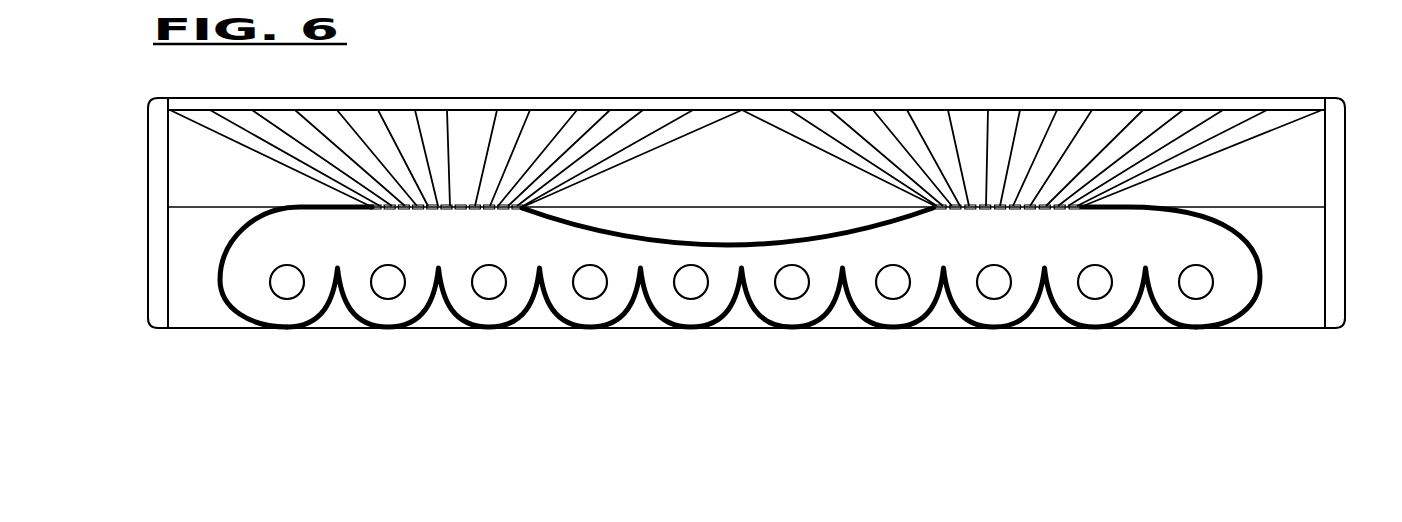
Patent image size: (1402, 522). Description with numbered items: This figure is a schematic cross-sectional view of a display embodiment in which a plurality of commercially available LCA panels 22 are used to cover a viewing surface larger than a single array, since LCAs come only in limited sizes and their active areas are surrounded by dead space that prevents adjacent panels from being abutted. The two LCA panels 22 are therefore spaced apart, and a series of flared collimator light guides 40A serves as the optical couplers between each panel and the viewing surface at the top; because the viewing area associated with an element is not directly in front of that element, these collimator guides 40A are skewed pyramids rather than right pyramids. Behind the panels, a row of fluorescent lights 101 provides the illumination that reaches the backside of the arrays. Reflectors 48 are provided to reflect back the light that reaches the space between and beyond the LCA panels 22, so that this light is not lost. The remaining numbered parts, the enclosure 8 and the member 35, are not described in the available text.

The housing 8 is at (511, 101).
The LCA panel 22 is at (387, 205).
The flared collimator light guide 40A is at (360, 118).
The reflector 48 is at (222, 245).
The scalloped member 35 is at (775, 323).
The fluorescent light 101 is at (590, 299).